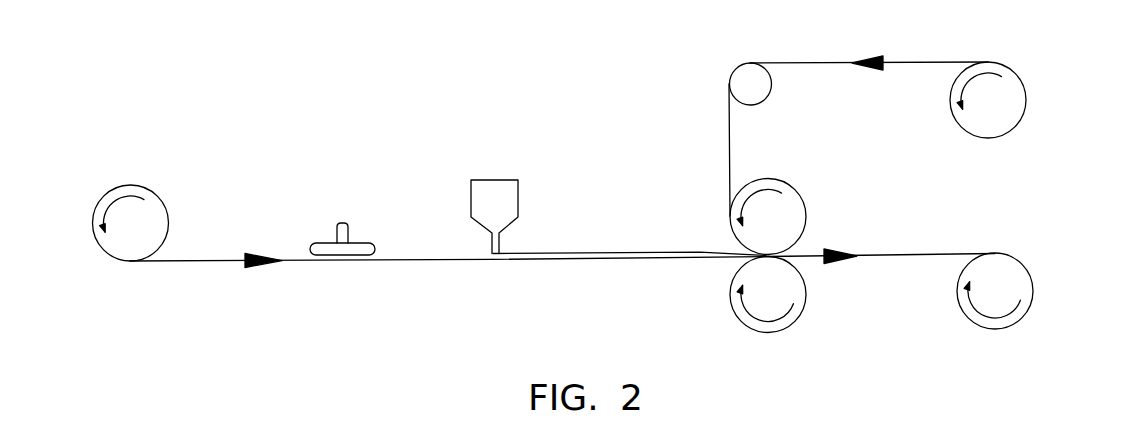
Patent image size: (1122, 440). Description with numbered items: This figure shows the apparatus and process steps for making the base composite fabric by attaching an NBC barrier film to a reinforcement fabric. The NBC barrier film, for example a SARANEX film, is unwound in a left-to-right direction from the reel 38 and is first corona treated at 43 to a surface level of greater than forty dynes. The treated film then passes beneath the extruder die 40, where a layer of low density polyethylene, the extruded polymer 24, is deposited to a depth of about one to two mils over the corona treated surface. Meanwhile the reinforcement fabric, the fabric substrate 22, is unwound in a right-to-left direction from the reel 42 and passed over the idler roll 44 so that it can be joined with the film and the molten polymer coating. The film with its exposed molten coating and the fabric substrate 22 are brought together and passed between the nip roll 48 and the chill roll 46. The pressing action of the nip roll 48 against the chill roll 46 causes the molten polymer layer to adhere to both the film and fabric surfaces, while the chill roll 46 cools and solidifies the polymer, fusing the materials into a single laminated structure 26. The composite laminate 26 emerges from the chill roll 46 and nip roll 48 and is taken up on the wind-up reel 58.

The fabric substrate 22 is at (200, 260).
The extruded polymer 24 is at (588, 253).
The single laminated structure 26 is at (880, 254).
The reel 38 is at (127, 185).
The extruder die 40 is at (493, 180).
The reel 42 is at (1006, 85).
The corona treatment 43 is at (342, 223).
The idler roll 44 is at (745, 79).
The chill roll 46 is at (765, 178).
The nip roll 48 is at (765, 332).
The wind-up reel 58 is at (995, 329).